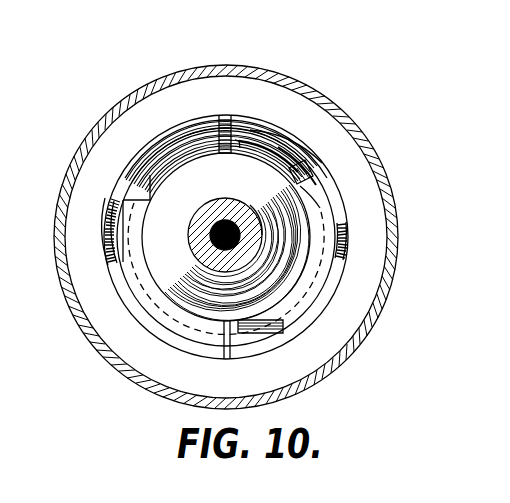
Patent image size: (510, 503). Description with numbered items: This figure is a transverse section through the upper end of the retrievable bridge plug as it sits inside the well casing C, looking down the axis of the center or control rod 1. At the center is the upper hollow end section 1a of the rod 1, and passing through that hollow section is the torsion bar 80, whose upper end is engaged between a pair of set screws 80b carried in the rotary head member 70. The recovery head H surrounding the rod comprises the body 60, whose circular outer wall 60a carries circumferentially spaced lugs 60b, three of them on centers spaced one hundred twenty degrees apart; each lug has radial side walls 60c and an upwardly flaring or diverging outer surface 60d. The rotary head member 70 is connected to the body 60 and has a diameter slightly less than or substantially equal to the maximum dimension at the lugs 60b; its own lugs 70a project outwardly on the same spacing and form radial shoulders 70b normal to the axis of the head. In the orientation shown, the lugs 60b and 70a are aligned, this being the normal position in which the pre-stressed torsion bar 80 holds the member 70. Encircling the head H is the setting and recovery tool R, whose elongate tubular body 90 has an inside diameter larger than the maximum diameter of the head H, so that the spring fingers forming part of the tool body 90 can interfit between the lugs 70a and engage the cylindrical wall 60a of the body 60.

The casing C is at (231, 67).
The rotary head member 70 is at (238, 123).
The lugs 70a is at (282, 148).
The radial shoulders 70b is at (262, 128).
The body 60 is at (153, 306).
The circular outer wall 60a is at (183, 166).
The lugs 60b is at (294, 166).
The radial side walls 60c is at (320, 183).
The outer surface 60d is at (314, 172).
The tubular body 90 is at (150, 193).
The setting and recovery tool R is at (103, 242).
The torsion bar 80 is at (205, 255).
The set screws 80b is at (228, 224).
The center or control rod 1 is at (263, 253).
The upper hollow end section 1a is at (255, 222).
The recovery head H is at (257, 298).